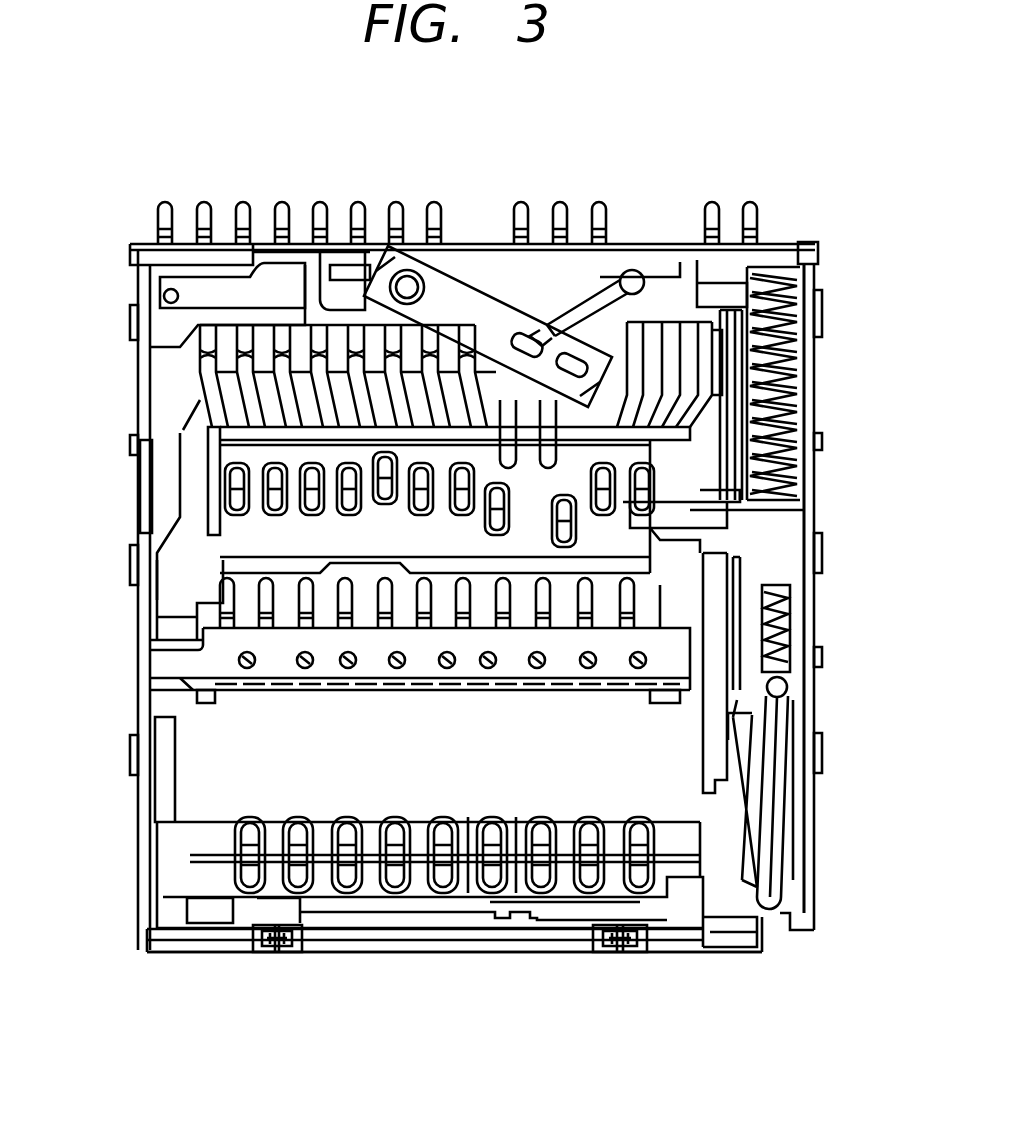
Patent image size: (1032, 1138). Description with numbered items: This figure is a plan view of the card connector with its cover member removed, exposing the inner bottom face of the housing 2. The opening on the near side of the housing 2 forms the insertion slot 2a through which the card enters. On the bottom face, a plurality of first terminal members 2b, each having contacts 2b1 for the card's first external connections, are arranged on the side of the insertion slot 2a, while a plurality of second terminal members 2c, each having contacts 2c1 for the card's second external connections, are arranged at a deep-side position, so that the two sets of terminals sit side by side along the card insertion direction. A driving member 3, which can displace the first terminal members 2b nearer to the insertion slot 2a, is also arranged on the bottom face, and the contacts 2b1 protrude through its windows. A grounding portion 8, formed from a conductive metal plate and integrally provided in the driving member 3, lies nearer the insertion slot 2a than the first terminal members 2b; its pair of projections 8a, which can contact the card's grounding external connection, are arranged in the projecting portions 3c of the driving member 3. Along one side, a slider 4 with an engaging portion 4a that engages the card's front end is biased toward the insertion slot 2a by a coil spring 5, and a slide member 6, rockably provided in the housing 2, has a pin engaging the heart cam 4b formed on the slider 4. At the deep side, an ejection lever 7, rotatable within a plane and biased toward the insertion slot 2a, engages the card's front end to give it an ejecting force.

The housing 2 is at (136, 796).
The insertion slot 2a is at (410, 955).
The first terminal members 2b is at (459, 858).
The contacts 2b1 is at (446, 852).
The second terminal members 2c is at (293, 468).
The contacts 2c1 is at (300, 502).
The driving member 3 is at (240, 795).
The projecting portions 3c is at (283, 952).
The slider 4 is at (806, 547).
The engaging portion 4a is at (698, 495).
The heart cam 4b is at (790, 808).
The coil spring 5 is at (777, 378).
The slide member 6 is at (785, 712).
The ejection lever 7 is at (462, 300).
The grounding portion 8 is at (403, 914).
The projections 8a is at (265, 950).